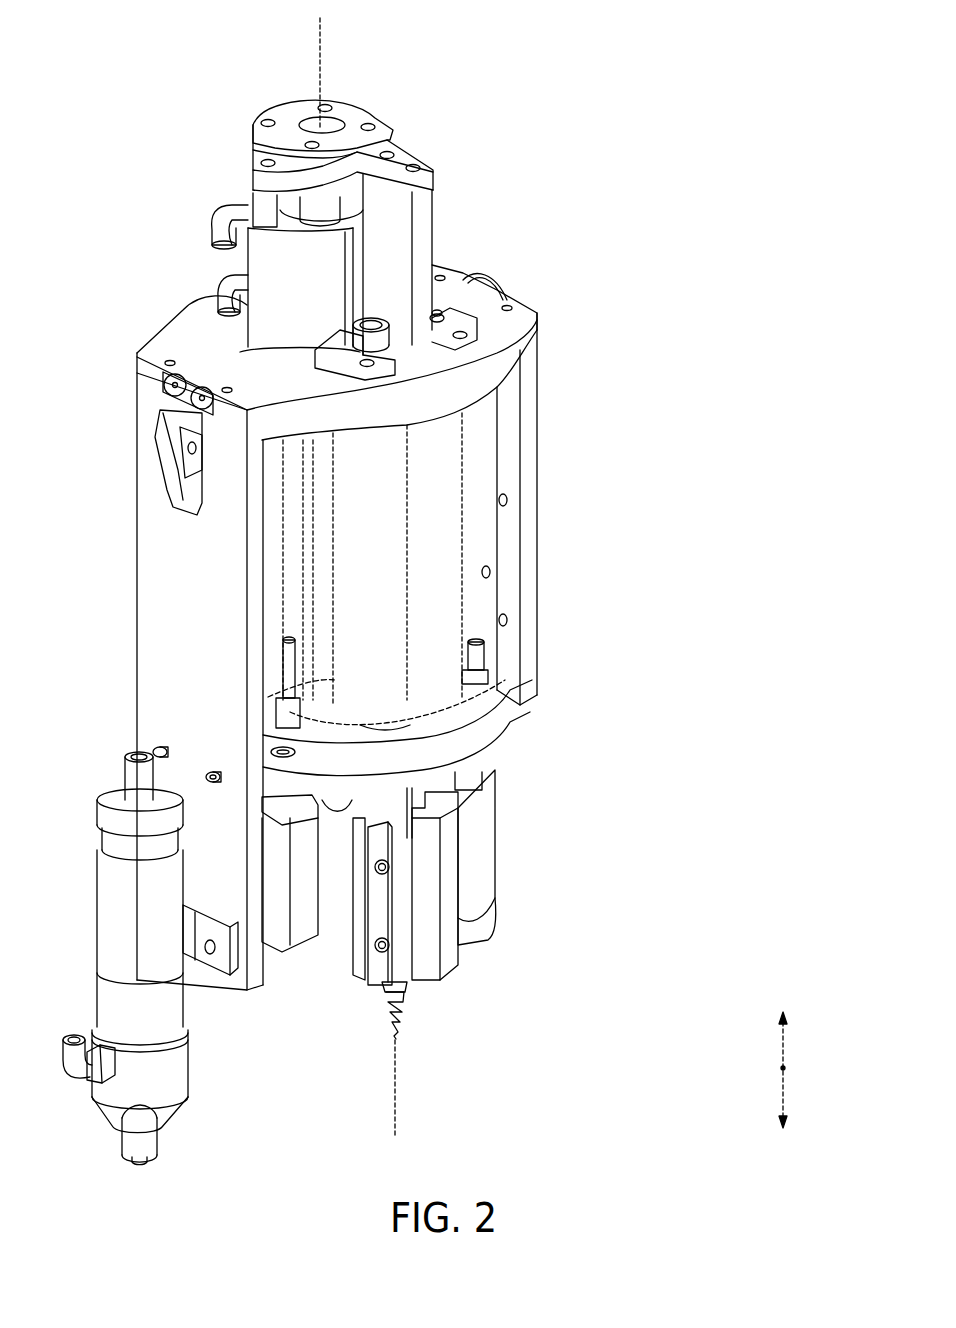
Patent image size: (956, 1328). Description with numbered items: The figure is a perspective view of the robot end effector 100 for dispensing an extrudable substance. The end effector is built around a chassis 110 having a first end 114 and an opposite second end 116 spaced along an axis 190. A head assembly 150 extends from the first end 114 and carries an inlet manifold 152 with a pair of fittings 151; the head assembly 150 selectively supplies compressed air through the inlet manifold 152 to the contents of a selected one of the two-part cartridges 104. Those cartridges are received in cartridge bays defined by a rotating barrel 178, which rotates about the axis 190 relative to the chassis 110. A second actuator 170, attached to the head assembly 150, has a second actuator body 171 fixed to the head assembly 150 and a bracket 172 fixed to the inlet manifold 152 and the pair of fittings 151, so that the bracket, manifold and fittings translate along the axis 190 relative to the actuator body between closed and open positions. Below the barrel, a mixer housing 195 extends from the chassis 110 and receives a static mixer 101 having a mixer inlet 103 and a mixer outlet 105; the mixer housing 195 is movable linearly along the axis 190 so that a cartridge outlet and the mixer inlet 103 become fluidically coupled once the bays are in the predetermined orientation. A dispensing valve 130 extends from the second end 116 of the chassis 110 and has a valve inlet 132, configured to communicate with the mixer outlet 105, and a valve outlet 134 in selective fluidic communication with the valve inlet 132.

The robot end effector 100 is at (122, 100).
The axis 190 is at (318, 72).
The bracket 172 is at (352, 120).
The second actuator body 171 is at (262, 333).
The second actuator 170 is at (232, 285).
The first end 114 is at (137, 321).
The head assembly 150 is at (420, 386).
The pair of fittings 151 is at (350, 350).
The inlet manifold 152 is at (374, 395).
The chassis 110 is at (212, 619).
The rotating barrel 178 is at (488, 652).
The mixer inlet 103 is at (390, 727).
The two-part cartridges 104 is at (496, 714).
The mixer outlet 105 is at (425, 950).
The mixer housing 195 is at (390, 925).
The static mixer 101 is at (405, 1008).
The valve inlet 132 is at (130, 783).
The dispensing valve 130 is at (108, 917).
The second end 116 is at (230, 985).
The valve outlet 134 is at (130, 1143).